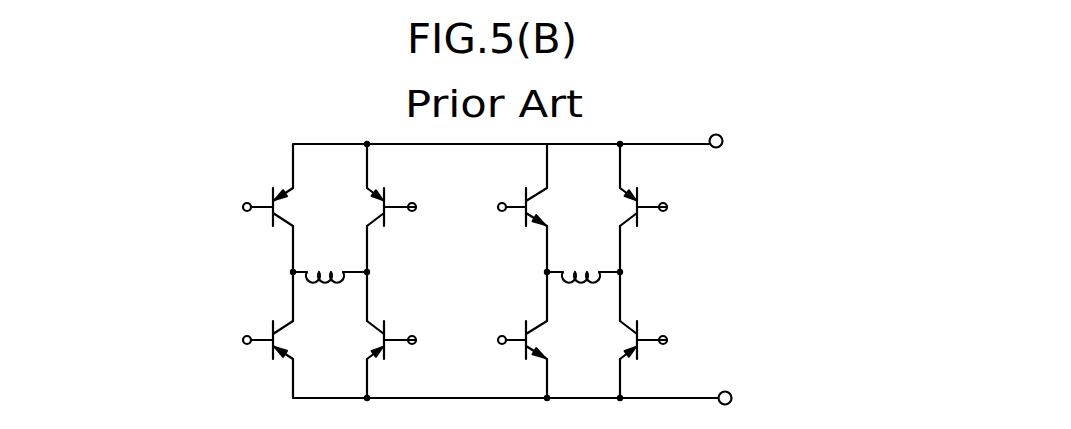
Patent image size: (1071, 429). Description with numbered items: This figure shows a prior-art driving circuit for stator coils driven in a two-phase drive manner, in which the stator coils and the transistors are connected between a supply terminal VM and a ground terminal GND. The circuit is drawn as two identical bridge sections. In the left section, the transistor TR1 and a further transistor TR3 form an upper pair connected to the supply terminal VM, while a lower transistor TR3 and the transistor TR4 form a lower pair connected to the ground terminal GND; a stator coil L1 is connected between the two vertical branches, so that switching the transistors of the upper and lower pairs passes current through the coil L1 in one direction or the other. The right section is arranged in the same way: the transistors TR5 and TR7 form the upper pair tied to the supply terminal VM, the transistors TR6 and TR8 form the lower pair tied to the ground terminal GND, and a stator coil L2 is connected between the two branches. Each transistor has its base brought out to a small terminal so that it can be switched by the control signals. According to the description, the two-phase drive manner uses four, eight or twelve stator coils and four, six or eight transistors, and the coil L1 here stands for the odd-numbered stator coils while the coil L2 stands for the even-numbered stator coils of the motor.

The transistor TR1 is at (256, 197).
The transistor TR3 is at (326, 264).
The transistor TR4 is at (402, 332).
The transistor TR5 is at (505, 197).
The transistor TR6 is at (505, 332).
The transistor TR7 is at (656, 197).
The transistor TR8 is at (656, 331).
The stator coil L1 is at (326, 262).
The stator coil L2 is at (586, 258).
The motor supply voltage terminal VM is at (744, 140).
The ground terminal GND is at (769, 399).